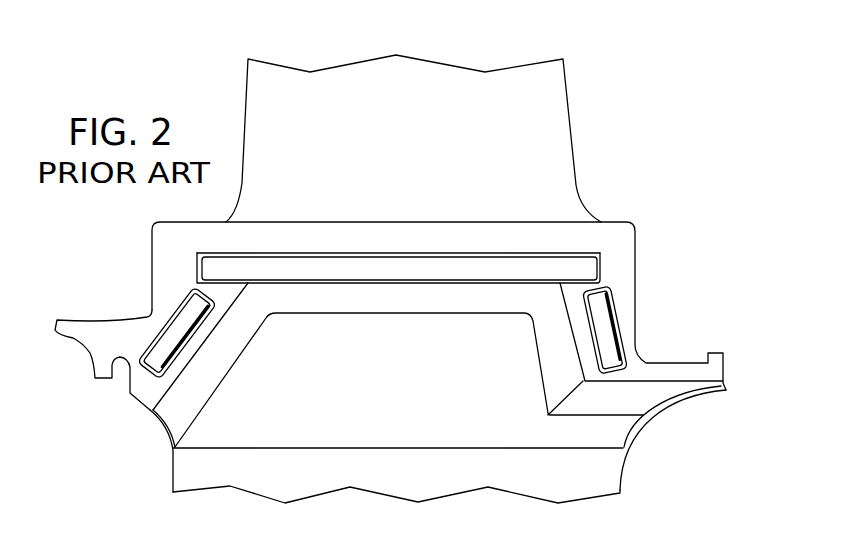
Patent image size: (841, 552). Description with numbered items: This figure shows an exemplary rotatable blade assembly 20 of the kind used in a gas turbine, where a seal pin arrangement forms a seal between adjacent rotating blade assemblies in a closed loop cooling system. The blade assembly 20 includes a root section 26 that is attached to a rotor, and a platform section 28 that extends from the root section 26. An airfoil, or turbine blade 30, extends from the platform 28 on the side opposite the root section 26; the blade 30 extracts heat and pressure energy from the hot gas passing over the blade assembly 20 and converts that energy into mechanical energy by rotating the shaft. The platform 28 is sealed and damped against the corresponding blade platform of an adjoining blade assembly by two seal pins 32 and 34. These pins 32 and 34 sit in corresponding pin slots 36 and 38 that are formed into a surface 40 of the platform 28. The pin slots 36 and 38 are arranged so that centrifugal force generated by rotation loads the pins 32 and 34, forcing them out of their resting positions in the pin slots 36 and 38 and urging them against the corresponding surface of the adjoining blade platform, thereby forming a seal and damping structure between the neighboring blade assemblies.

The rotatable blade assembly 20 is at (612, 140).
The root section 26 is at (477, 343).
The platform section 28 is at (637, 270).
The turbine blade 30 is at (327, 158).
The seal pin 32 is at (488, 268).
The seal pin 34 is at (166, 343).
The pin slot 36 is at (508, 253).
The pin slot 38 is at (177, 310).
The surface 40 is at (362, 237).